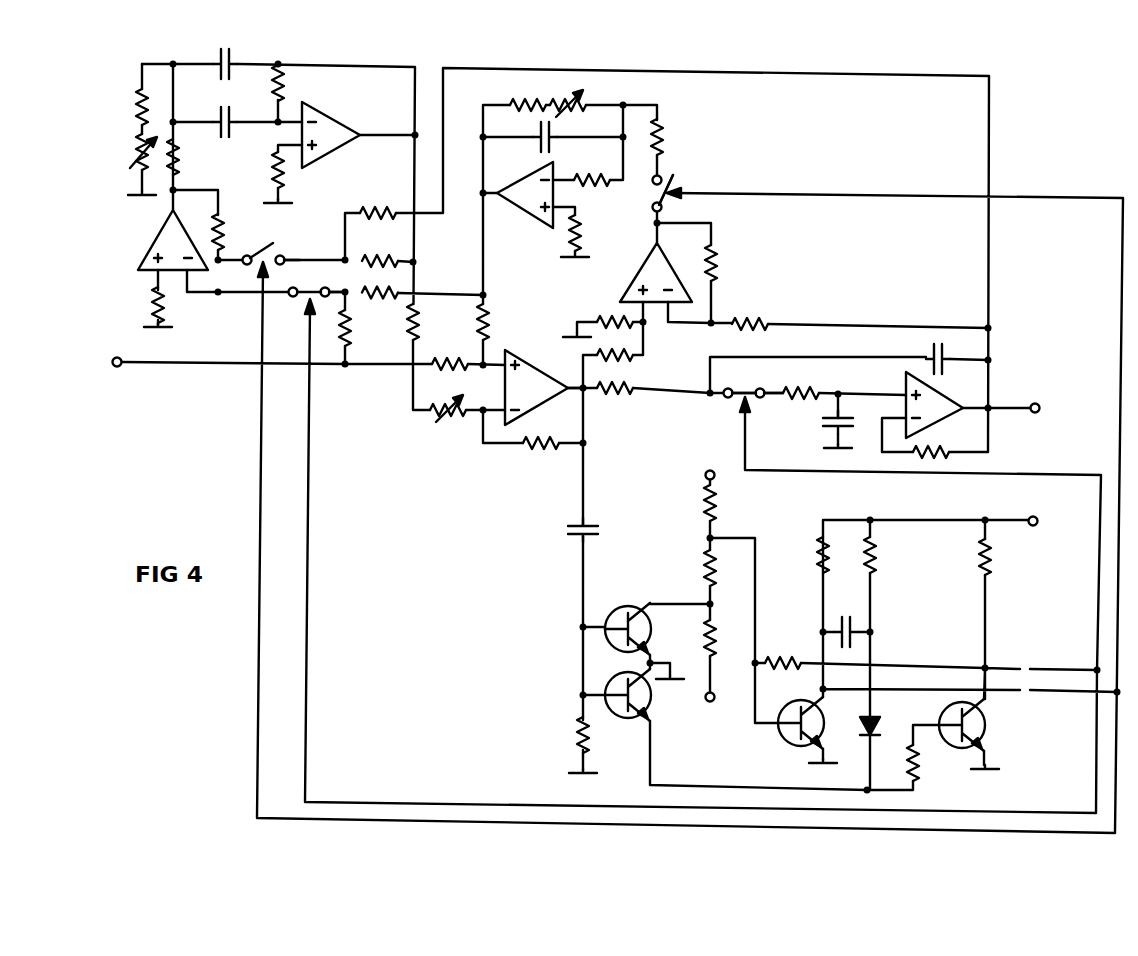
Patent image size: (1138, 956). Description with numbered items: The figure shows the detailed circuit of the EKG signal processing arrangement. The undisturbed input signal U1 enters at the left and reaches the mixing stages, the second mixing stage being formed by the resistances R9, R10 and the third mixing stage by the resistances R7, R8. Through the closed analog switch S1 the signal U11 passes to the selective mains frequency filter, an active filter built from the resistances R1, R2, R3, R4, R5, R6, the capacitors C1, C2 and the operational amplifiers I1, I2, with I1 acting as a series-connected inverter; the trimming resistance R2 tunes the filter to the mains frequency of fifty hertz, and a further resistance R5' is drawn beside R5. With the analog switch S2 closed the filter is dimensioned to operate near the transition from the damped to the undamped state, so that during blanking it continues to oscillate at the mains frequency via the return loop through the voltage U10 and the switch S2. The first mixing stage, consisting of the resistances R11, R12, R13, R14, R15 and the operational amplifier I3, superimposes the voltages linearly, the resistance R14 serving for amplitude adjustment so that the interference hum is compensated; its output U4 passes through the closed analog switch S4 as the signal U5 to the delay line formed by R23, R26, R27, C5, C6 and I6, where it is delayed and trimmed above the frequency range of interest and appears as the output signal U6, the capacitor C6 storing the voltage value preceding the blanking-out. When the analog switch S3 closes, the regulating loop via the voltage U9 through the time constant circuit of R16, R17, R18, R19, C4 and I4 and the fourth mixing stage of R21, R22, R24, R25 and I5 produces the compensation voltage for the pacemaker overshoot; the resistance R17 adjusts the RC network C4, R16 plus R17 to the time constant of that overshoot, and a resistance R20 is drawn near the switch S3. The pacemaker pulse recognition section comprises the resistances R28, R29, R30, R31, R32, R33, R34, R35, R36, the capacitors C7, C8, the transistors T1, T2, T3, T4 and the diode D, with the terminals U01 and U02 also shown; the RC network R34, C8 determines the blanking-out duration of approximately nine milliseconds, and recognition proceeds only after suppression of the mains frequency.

The ohmic resistance R1 is at (129, 99).
The trimming resistance R2 is at (133, 162).
The capacitor C1 is at (217, 73).
The capacitor C2 is at (234, 131).
The ohmic resistance R3 is at (293, 83).
The ohmic resistance R4 is at (263, 172).
The resistor R5' is at (190, 157).
The ohmic resistance R5 is at (233, 223).
The ohmic resistance R6 is at (146, 305).
The ohmic resistance R7 is at (395, 210).
The ohmic resistance R8 is at (380, 250).
The ohmic resistance R9 is at (399, 306).
The ohmic resistance R10 is at (351, 335).
The ohmic resistance R11 is at (429, 320).
The ohmic resistance R12 is at (486, 315).
The ohmic resistance R13 is at (432, 358).
The amplitude adjusting resistance R14 is at (440, 424).
The ohmic resistance R15 is at (547, 452).
The ohmic resistance R16 is at (508, 98).
The adjustable resistance R17 is at (572, 112).
The ohmic resistance R18 is at (586, 191).
The ohmic resistance R19 is at (593, 233).
The resistor R20 is at (664, 143).
The ohmic resistance R21 is at (613, 312).
The ohmic resistance R22 is at (625, 361).
The ohmic resistance R23 is at (611, 394).
The ohmic resistance R24 is at (730, 263).
The ohmic resistance R25 is at (760, 322).
The ohmic resistance R26 is at (807, 388).
The ohmic resistance R27 is at (940, 446).
The ohmic resistance R28 is at (719, 510).
The ohmic resistance R29 is at (724, 568).
The ohmic resistance R30 is at (724, 638).
The ohmic resistance R31 is at (564, 735).
The ohmic resistance R32 is at (770, 654).
The ohmic resistance R33 is at (813, 553).
The ohmic resistance R34 is at (887, 555).
The ohmic resistance R35 is at (975, 570).
The ohmic resistance R36 is at (918, 767).
The capacitor C4 is at (541, 150).
The capacitor C5 is at (934, 352).
The capacitor C6 is at (846, 428).
The capacitor C7 is at (589, 524).
The capacitor C8 is at (842, 616).
The operational amplifier I1 is at (157, 239).
The operational amplifier I2 is at (343, 120).
The operational amplifier I3 is at (524, 366).
The operational amplifier I4 is at (536, 224).
The operational amplifier I5 is at (634, 278).
The operational amplifier I6 is at (940, 394).
The analog switch S1 is at (308, 308).
The analog switch S2 is at (252, 257).
The analog switch S3 is at (667, 208).
The analog switch S4 is at (749, 387).
The transistor T1 is at (627, 603).
The transistor T2 is at (628, 710).
The transistor T3 is at (786, 744).
The transistor T4 is at (984, 727).
The diode D is at (878, 727).
The input signal U1 is at (107, 362).
The output signal of first mixing stage U4 is at (570, 405).
The delay line input signal U5 is at (776, 408).
The output signal U6 is at (1048, 412).
The regulating loop voltage U9 is at (646, 175).
The return loop voltage U10 is at (302, 250).
The filter input signal U11 is at (343, 284).
The supply voltage U01 is at (1034, 541).
The supply voltage U02 is at (691, 599).